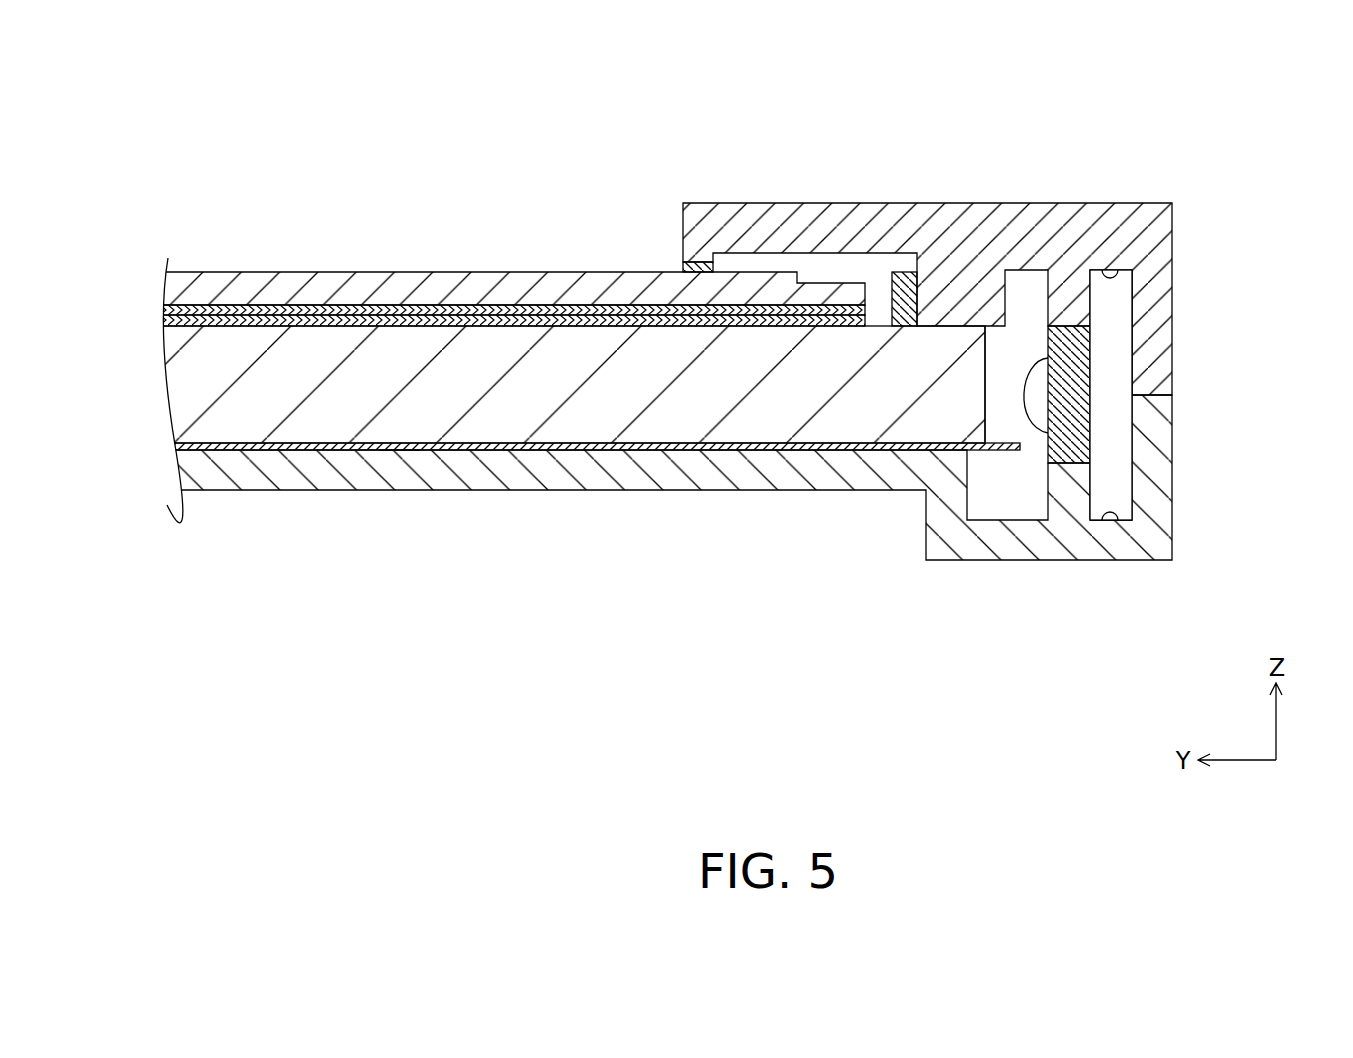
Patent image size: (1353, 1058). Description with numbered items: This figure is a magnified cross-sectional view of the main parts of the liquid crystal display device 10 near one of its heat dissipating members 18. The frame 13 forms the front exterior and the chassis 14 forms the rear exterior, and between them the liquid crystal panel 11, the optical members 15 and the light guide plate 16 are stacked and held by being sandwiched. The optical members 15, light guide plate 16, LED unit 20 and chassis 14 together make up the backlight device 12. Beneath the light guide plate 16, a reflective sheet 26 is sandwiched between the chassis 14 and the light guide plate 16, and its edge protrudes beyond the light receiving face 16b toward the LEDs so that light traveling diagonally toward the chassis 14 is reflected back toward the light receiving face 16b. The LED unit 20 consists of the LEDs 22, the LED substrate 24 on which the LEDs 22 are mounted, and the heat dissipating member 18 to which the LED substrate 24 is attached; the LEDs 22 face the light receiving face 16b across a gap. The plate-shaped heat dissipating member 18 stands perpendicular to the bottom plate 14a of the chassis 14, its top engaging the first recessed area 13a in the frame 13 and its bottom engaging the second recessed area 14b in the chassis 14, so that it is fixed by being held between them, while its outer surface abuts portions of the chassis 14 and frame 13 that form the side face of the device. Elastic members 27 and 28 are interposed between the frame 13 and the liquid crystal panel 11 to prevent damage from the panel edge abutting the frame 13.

The liquid crystal display device 10 is at (515, 118).
The liquid crystal panel 11 is at (288, 283).
The backlight device 12 is at (561, 585).
The frame 13 is at (952, 233).
The first recessed area 13a is at (1105, 270).
The chassis 14 is at (490, 492).
The bottom plate 14a is at (398, 473).
The second recessed area 14b is at (1123, 517).
The optical members 15 is at (553, 323).
The light guide plate 16 is at (790, 402).
The light receiving face 16b is at (990, 410).
The heat dissipating member 18 is at (1112, 447).
The LED unit 20 is at (1023, 132).
The LED 22 is at (1035, 373).
The LED substrate 24 is at (1070, 367).
The reflective sheet 26 is at (687, 447).
The elastic member 27 is at (700, 255).
The elastic member 28 is at (903, 267).